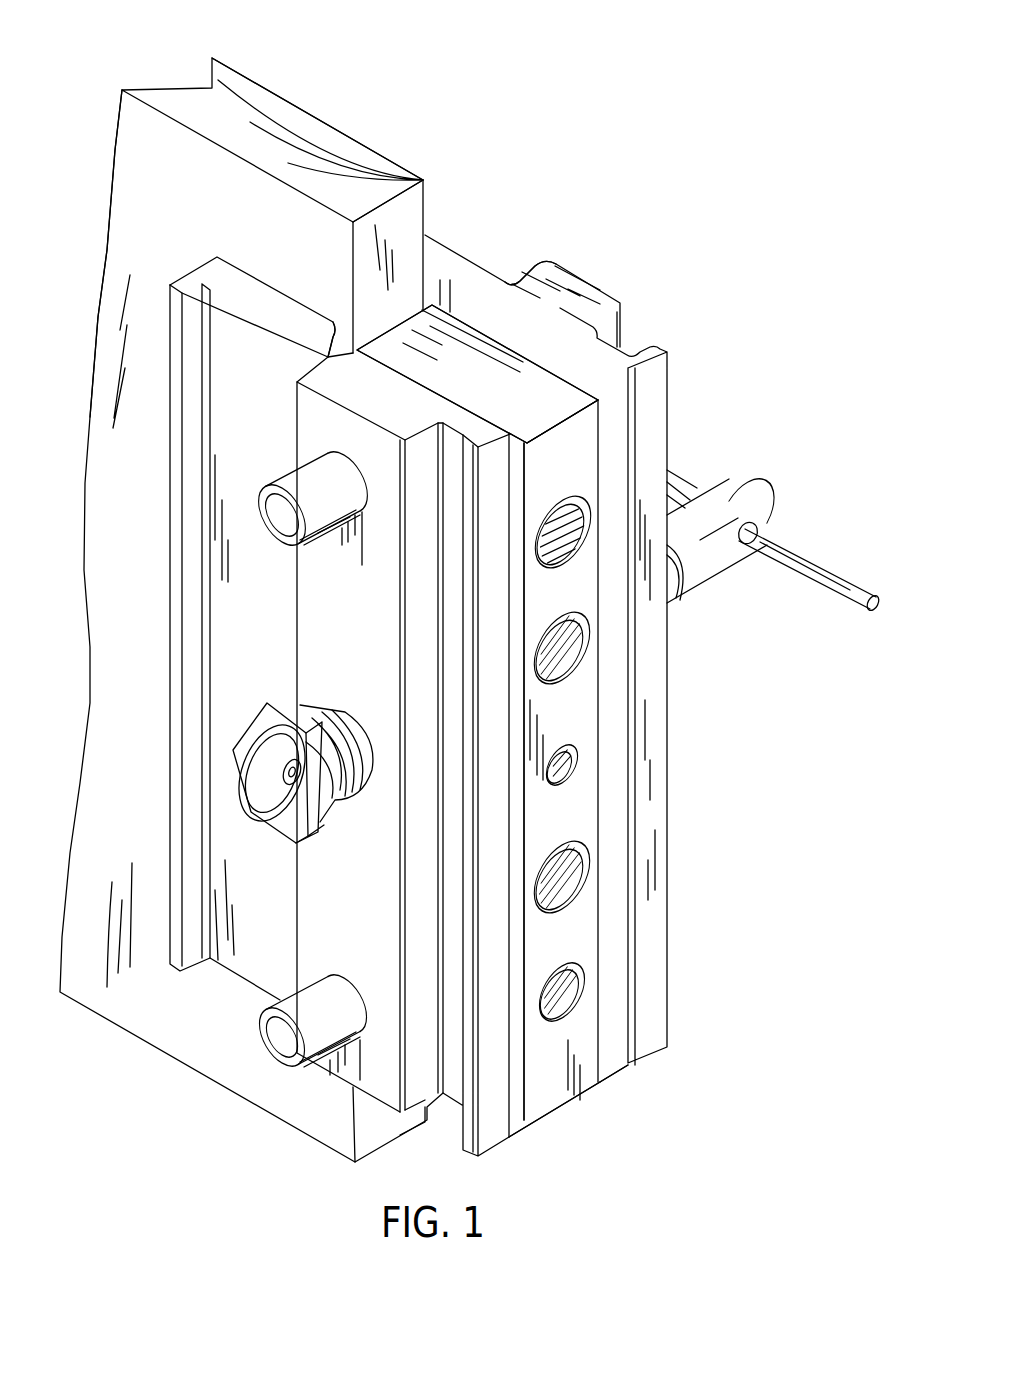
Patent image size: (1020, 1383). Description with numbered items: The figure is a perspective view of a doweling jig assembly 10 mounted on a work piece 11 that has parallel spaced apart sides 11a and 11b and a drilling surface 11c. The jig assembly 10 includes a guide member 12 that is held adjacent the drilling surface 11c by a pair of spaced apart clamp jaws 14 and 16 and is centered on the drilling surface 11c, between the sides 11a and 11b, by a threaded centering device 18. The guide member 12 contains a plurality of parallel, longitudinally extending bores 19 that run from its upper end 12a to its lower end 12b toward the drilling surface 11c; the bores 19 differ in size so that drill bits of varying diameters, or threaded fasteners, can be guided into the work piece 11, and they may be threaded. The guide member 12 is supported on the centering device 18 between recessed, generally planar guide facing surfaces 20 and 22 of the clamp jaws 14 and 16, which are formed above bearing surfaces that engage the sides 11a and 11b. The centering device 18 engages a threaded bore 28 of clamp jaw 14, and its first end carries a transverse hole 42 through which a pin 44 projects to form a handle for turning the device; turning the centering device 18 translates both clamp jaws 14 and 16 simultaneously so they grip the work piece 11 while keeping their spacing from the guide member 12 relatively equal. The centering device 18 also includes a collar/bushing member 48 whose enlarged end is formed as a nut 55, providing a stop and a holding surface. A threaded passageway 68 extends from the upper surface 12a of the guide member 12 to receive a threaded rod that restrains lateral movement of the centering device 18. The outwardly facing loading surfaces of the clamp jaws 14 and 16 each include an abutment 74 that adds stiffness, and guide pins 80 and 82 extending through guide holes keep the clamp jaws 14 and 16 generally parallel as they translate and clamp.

The jig assembly 10 is at (640, 168).
The work piece 11 is at (272, 78).
The side of work piece 11a is at (150, 165).
The side of work piece 11b is at (372, 140).
The drilling surface 11c is at (405, 238).
The guide member 12 is at (567, 368).
The upper end of guide member 12a is at (588, 696).
The lower end of guide member 12b is at (393, 338).
The clamp jaw 14 is at (155, 466).
The clamp jaw 16 is at (588, 265).
The threaded centering device 18 is at (784, 490).
The bores 19 is at (587, 634).
The guide facing surface 20 is at (352, 328).
The guide facing surface 22 is at (616, 400).
The threaded bore 28 is at (352, 716).
The transverse hole 42 is at (777, 530).
The pin 44 is at (842, 560).
The collar/bushing member 48 is at (235, 741).
The nut 55 is at (256, 806).
The threaded passageway 68 is at (578, 756).
The abutment 74 is at (543, 264).
The guide pin 80 is at (280, 1047).
The guide pin 82 is at (278, 532).